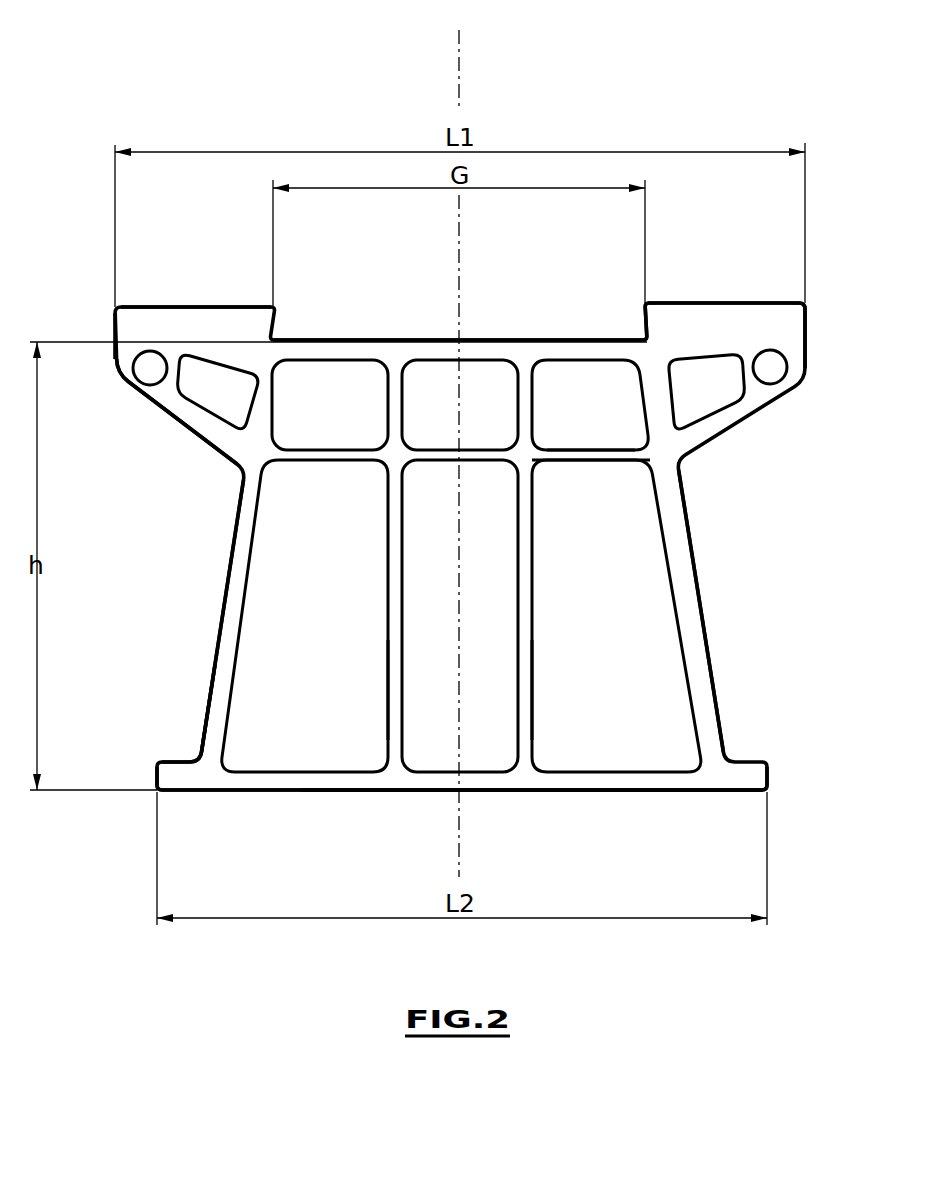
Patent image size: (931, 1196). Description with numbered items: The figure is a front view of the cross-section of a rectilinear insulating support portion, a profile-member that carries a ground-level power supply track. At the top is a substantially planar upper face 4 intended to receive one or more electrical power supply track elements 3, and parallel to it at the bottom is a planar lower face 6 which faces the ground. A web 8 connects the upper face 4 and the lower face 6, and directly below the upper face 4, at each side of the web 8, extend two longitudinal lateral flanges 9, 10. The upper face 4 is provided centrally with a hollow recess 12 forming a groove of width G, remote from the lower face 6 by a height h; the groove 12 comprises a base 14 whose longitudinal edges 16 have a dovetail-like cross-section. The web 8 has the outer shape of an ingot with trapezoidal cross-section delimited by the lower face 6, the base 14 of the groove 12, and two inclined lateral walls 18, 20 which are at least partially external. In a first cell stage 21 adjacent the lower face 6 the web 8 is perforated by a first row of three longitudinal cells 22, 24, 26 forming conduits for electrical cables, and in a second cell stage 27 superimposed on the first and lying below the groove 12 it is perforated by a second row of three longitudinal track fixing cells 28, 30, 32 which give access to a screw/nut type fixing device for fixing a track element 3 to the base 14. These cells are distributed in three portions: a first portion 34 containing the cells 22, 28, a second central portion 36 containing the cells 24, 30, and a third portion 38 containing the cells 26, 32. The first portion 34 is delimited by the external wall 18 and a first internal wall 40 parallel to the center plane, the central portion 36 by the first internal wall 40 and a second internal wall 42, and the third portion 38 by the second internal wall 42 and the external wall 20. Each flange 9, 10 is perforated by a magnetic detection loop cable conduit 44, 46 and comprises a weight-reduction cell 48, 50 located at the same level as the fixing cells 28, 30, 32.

The electrical power supply track element 3 is at (460, 48).
The upper face 4 is at (181, 307).
The lower face 6 is at (257, 793).
The web 8 is at (200, 597).
The lateral flange 9 is at (122, 332).
The lateral flange 10 is at (785, 322).
The hollow recess 12 is at (340, 324).
The base 14 is at (600, 335).
The longitudinal edges 16 is at (270, 338).
The lateral wall 18 is at (215, 643).
The lateral wall 20 is at (712, 665).
The first cell stage 21 is at (632, 577).
The longitudinal cell 22 is at (240, 722).
The longitudinal cell 24 is at (433, 757).
The longitudinal cell 26 is at (622, 745).
The second cell stage 27 is at (600, 429).
The track fixing cell 28 is at (356, 372).
The track fixing cell 30 is at (425, 378).
The track fixing cell 32 is at (562, 378).
The first portion 34 is at (338, 629).
The second central portion 36 is at (475, 634).
The third portion 38 is at (626, 629).
The first internal wall 40 is at (393, 692).
The second internal wall 42 is at (527, 702).
The magnetic detection loop cable conduit 44 is at (145, 370).
The magnetic detection loop cable conduit 46 is at (773, 372).
The weight-reduction cell 48 is at (190, 398).
The weight-reduction cell 50 is at (708, 400).